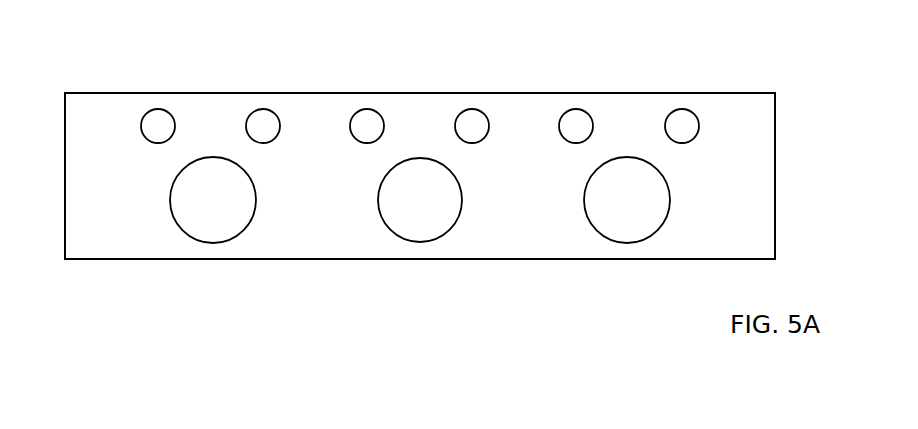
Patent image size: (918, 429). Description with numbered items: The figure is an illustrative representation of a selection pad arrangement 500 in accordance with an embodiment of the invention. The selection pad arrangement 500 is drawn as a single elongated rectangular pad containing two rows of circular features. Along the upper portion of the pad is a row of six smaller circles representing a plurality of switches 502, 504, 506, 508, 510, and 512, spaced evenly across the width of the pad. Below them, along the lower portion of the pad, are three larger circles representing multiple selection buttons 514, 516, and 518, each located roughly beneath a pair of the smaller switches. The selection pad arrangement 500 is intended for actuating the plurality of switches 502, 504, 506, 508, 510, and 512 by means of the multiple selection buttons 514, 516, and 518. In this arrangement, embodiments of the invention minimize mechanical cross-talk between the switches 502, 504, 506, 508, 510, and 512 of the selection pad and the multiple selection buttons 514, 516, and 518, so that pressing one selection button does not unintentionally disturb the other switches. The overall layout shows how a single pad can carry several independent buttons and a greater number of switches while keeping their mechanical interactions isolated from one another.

The selection pad arrangement 500 is at (695, 60).
The switch 502 is at (143, 116).
The switch 504 is at (248, 117).
The switch 506 is at (351, 117).
The switch 508 is at (456, 117).
The switch 510 is at (560, 117).
The switch 512 is at (663, 124).
The selection button 514 is at (175, 222).
The selection button 516 is at (383, 222).
The selection button 518 is at (588, 222).